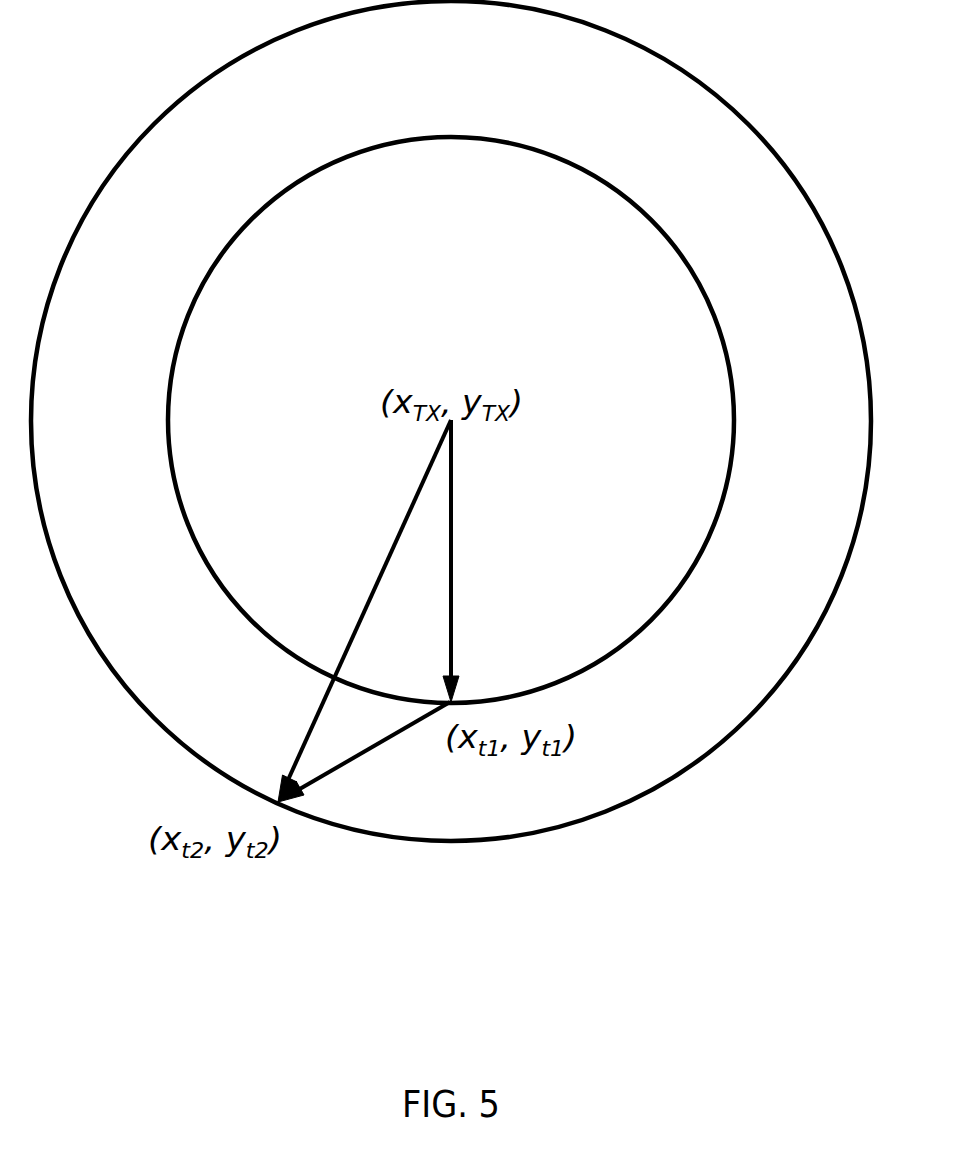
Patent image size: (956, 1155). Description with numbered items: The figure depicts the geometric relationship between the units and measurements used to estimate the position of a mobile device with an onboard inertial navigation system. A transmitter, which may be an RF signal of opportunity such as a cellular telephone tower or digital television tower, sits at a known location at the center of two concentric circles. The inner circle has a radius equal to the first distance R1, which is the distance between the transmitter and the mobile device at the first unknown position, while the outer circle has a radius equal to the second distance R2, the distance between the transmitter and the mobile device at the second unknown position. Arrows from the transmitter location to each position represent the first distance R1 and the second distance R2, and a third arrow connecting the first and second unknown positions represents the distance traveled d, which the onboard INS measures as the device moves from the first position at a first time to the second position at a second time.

The first distance R1 is at (473, 561).
The second distance R2 is at (364, 611).
The distance traveled d is at (364, 752).